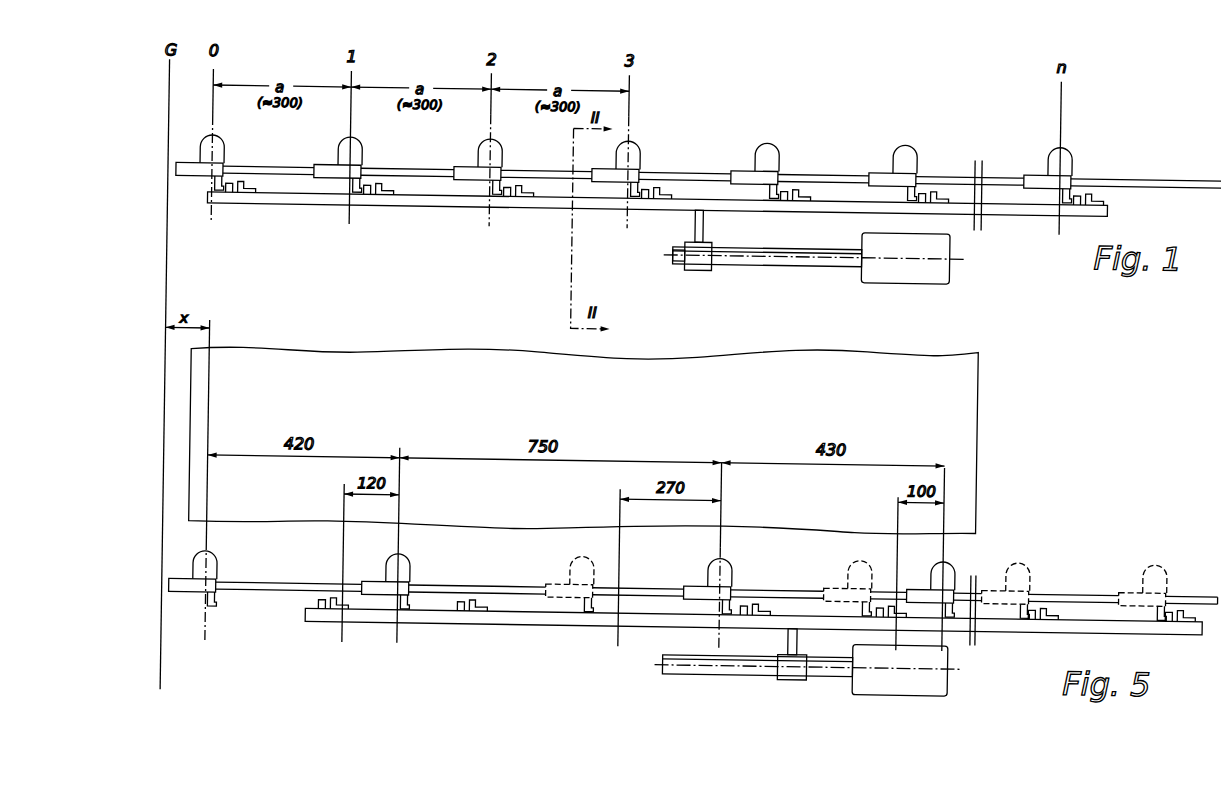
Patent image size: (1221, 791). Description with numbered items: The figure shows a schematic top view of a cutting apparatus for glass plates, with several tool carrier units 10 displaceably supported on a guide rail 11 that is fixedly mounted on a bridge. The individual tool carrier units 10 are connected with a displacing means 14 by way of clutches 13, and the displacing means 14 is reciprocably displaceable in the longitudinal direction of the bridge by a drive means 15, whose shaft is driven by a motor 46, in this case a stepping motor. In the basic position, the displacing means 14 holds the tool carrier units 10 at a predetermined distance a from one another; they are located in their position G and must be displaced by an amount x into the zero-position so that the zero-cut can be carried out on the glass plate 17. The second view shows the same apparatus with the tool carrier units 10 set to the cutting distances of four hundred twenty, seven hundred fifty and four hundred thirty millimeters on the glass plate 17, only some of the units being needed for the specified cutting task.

In FIG. 1, the tool carrier units 10 is at (221, 152).
In FIG. 5, the tool carrier units 10 is at (221, 566).
In FIG. 1, the guide rail 11 is at (686, 166).
In FIG. 5, the guide rail 11 is at (486, 579).
In FIG. 1, the clutches 13 is at (781, 175).
In FIG. 5, the clutches 13 is at (603, 610).
In FIG. 1, the displacing means 14 is at (953, 192).
In FIG. 5, the displacing means 14 is at (1083, 604).
In FIG. 1, the drive means 15 is at (846, 264).
In FIG. 5, the drive means 15 is at (837, 673).
In FIG. 5, the glass plate 17 is at (982, 366).
In FIG. 1, the motor 46 is at (951, 258).
In FIG. 5, the motor 46 is at (955, 676).